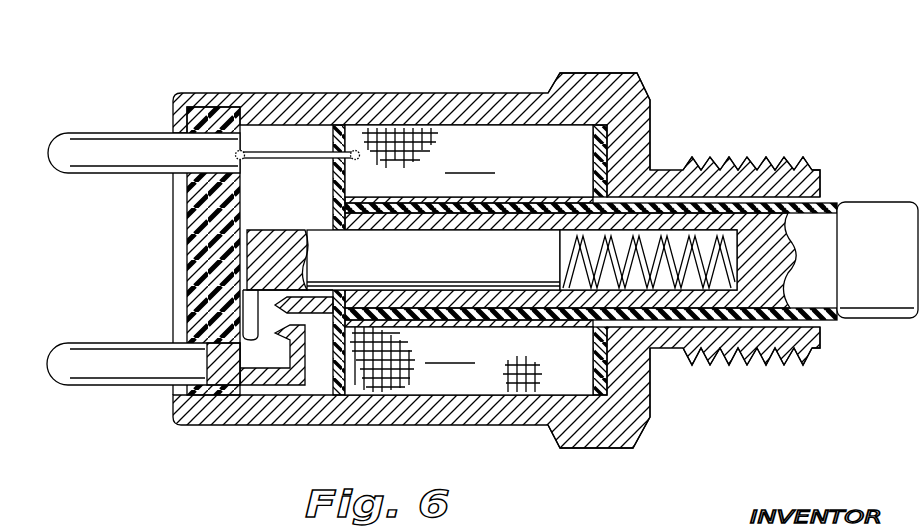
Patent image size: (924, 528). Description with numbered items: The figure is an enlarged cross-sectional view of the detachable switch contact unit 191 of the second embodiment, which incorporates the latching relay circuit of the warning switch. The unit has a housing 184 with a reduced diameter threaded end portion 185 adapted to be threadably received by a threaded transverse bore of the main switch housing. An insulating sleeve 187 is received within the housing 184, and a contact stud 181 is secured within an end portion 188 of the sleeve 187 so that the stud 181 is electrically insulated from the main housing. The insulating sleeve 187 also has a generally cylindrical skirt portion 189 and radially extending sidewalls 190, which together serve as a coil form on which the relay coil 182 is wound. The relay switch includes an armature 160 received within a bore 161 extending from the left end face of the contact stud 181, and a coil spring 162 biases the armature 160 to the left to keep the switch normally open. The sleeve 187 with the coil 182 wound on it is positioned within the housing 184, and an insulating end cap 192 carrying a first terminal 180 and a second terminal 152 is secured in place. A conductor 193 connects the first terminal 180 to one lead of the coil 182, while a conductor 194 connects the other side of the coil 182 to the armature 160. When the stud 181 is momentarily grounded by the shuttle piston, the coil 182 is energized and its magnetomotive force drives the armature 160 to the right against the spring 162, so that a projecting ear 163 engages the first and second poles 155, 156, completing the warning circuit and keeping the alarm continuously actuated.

The terminal 152 is at (95, 372).
The first pole 155 is at (315, 292).
The second pole 156 is at (272, 355).
The armature 160 is at (410, 264).
The bore 161 is at (705, 238).
The coil spring 162 is at (560, 264).
The projecting ear 163 is at (247, 313).
The first terminal 180 is at (92, 142).
The contact stud 181 is at (880, 298).
The relay coil 182 is at (402, 140).
The housing 184 is at (480, 97).
The reduced diameter threaded end portion 185 is at (725, 160).
The insulating sleeve 187 is at (333, 130).
The end portion 188 is at (815, 172).
The cylindrical skirt portion 189 is at (398, 199).
The radially extending sidewalls 190 is at (592, 160).
The detachable switch contact unit 191 is at (608, 73).
The insulating end cap 192 is at (195, 224).
The conductor 193 is at (292, 163).
The conductor 194 is at (586, 203).